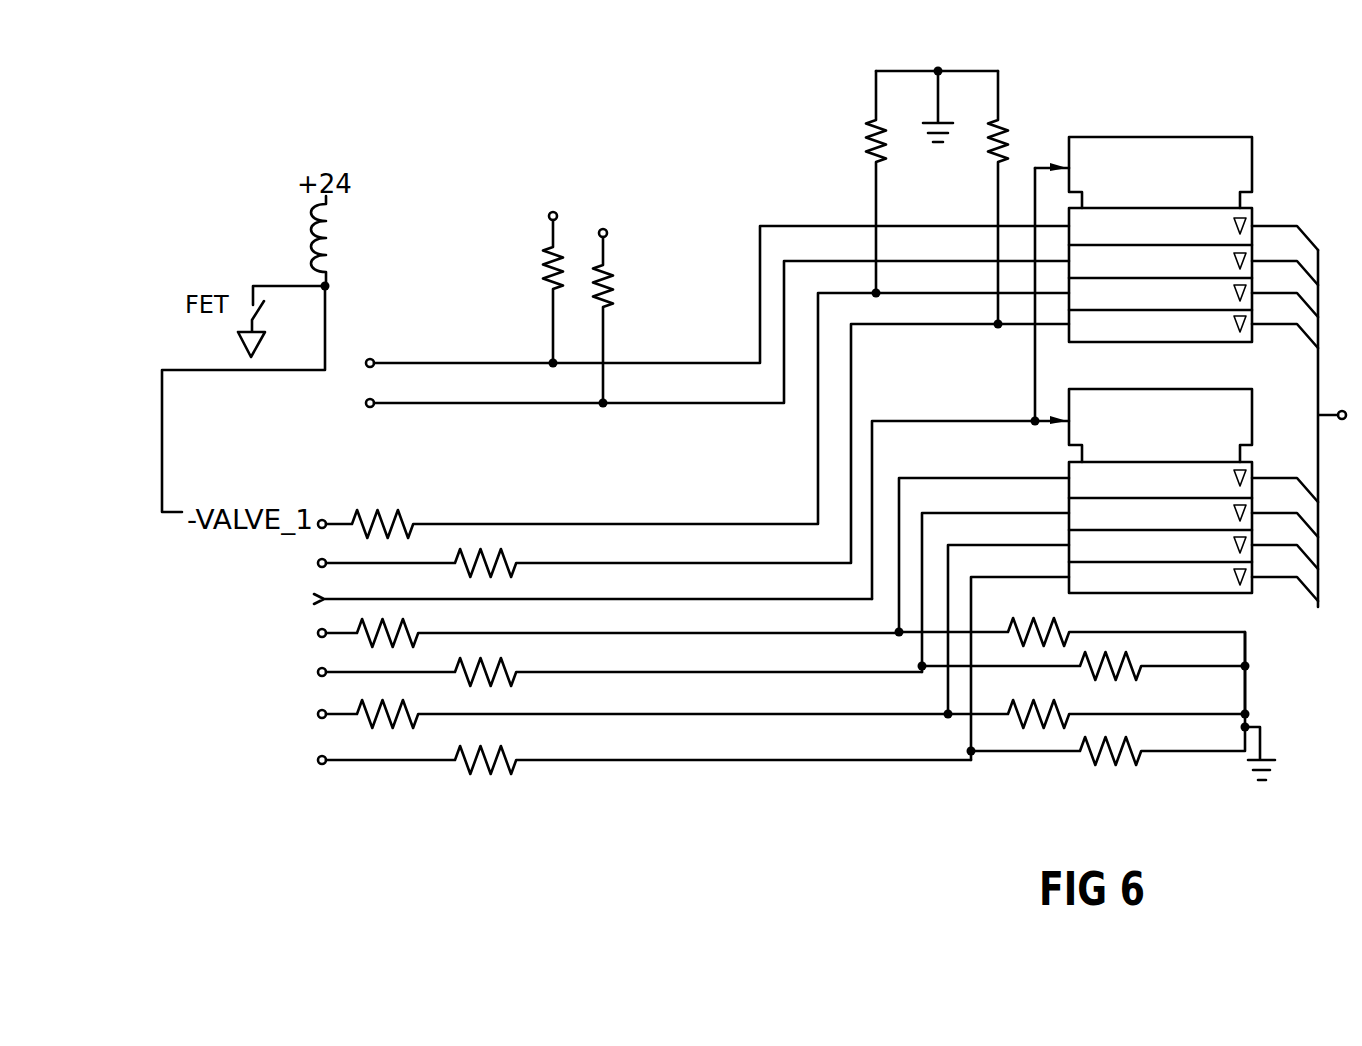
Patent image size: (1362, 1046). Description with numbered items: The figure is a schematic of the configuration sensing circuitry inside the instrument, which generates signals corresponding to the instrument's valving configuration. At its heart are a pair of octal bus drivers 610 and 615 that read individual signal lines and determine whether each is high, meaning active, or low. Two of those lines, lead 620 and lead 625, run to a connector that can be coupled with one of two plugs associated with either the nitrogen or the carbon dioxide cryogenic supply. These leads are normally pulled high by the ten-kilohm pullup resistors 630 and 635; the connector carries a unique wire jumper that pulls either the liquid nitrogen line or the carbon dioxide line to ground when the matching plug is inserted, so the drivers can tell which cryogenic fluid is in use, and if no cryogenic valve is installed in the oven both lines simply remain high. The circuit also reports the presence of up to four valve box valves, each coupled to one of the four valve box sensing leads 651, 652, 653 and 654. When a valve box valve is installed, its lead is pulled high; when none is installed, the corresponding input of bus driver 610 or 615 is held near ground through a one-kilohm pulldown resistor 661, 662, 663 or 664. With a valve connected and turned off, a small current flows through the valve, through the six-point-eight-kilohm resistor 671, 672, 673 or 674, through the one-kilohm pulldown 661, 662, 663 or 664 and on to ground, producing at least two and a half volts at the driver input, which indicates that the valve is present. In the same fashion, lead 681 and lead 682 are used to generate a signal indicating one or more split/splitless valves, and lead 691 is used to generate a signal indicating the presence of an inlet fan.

The octal bus driver 610 is at (1155, 137).
The octal bus driver 615 is at (1151, 389).
The lead 620 is at (687, 363).
The lead 625 is at (746, 403).
The pullup resistor 630 is at (553, 314).
The pullup resistor 635 is at (603, 331).
The valve box sensing lead 651 is at (319, 530).
The valve box sensing lead 652 is at (319, 568).
The valve box sensing lead 653 is at (319, 637).
The valve box sensing lead 654 is at (319, 676).
The pulldown resistor 661 is at (876, 107).
The pulldown resistor 662 is at (998, 178).
The pulldown resistor 663 is at (1069, 630).
The pulldown resistor 664 is at (1151, 648).
The resistor 671 is at (428, 522).
The resistor 672 is at (518, 562).
The resistor 673 is at (438, 633).
The resistor 674 is at (522, 671).
The lead 681 is at (505, 715).
The lead 682 is at (535, 760).
The lead 691 is at (577, 598).